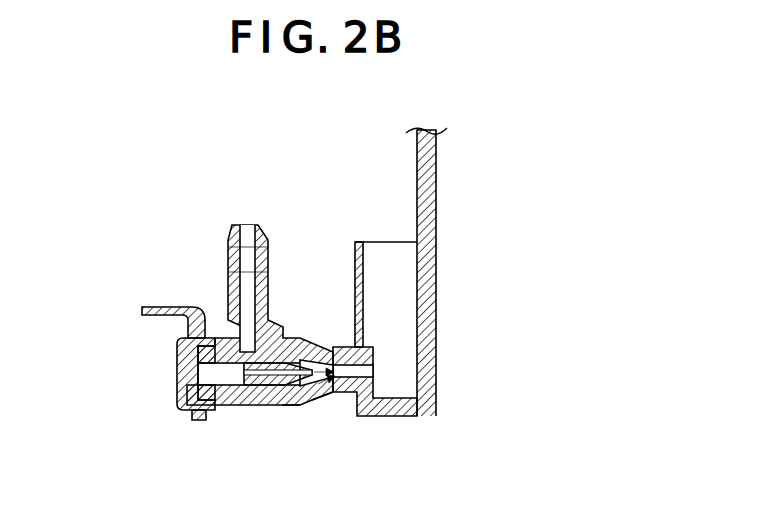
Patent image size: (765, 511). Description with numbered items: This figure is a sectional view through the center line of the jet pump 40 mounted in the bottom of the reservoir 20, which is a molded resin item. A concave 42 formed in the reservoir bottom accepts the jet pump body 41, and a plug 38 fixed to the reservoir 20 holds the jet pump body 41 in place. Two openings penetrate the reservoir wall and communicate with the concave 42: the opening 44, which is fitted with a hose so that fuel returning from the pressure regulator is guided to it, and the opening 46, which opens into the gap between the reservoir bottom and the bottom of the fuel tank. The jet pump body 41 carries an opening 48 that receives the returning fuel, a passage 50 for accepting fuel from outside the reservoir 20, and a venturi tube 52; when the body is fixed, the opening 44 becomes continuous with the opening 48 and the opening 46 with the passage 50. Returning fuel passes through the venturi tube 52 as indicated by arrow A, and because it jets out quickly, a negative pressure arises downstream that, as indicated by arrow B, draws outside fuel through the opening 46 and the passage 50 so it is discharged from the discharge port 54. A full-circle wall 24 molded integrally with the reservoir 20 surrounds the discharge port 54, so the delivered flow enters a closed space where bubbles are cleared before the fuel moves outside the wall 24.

The reservoir 20 is at (437, 200).
The wall 24 is at (363, 290).
The plug 38 is at (177, 355).
The jet pump 40 is at (278, 275).
The jet pump body 41 is at (210, 412).
The concave 42 is at (177, 402).
The opening 44 is at (250, 230).
The opening 46 is at (290, 412).
The opening 48 is at (227, 313).
The passage 50 is at (330, 400).
The venturi tube 52 is at (360, 340).
The discharge port 54 is at (367, 373).
The arrow A is at (245, 408).
The arrow B is at (300, 398).